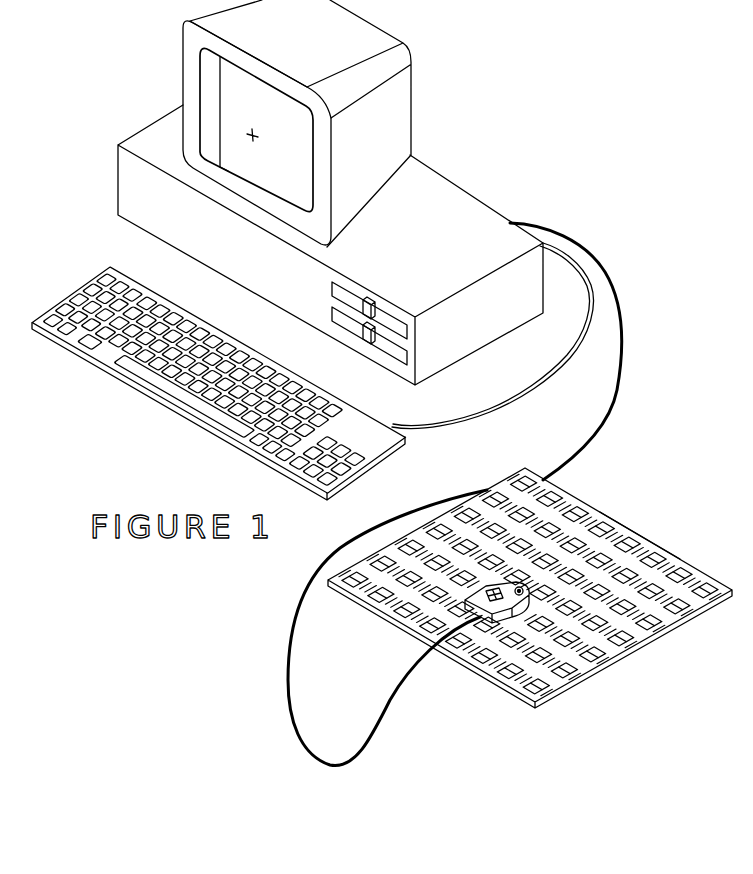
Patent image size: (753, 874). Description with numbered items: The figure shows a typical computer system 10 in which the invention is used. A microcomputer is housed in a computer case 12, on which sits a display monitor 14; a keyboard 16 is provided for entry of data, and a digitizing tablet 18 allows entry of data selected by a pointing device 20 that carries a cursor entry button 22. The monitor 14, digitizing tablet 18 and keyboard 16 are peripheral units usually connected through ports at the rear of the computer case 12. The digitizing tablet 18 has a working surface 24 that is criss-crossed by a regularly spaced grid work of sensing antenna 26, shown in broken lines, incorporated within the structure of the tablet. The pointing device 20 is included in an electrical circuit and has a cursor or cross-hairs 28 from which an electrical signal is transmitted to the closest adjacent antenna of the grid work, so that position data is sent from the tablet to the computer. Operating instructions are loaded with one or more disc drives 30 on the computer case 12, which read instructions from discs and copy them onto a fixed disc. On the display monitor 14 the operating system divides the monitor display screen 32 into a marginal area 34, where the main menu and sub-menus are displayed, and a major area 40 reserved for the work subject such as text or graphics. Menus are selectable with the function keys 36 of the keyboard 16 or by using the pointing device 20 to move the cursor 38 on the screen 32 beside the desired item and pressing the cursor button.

The computer system 10 is at (440, 165).
The computer case 12 is at (140, 198).
The display monitor 14 is at (357, 115).
The keyboard 16 is at (195, 395).
The digitizing tablet 18 is at (627, 548).
The pointing device 20 is at (467, 590).
The cursor entry button 22 is at (493, 587).
The working surface 24 is at (577, 505).
The sensing antenna 26 is at (637, 515).
The cursor or cross-hairs 28 is at (520, 586).
The disc drives 30 is at (347, 324).
The monitor display screen 32 is at (240, 168).
The marginal area 34 is at (205, 76).
The function keys 36 is at (98, 303).
The cursor 38 is at (256, 141).
The major area 40 is at (255, 108).